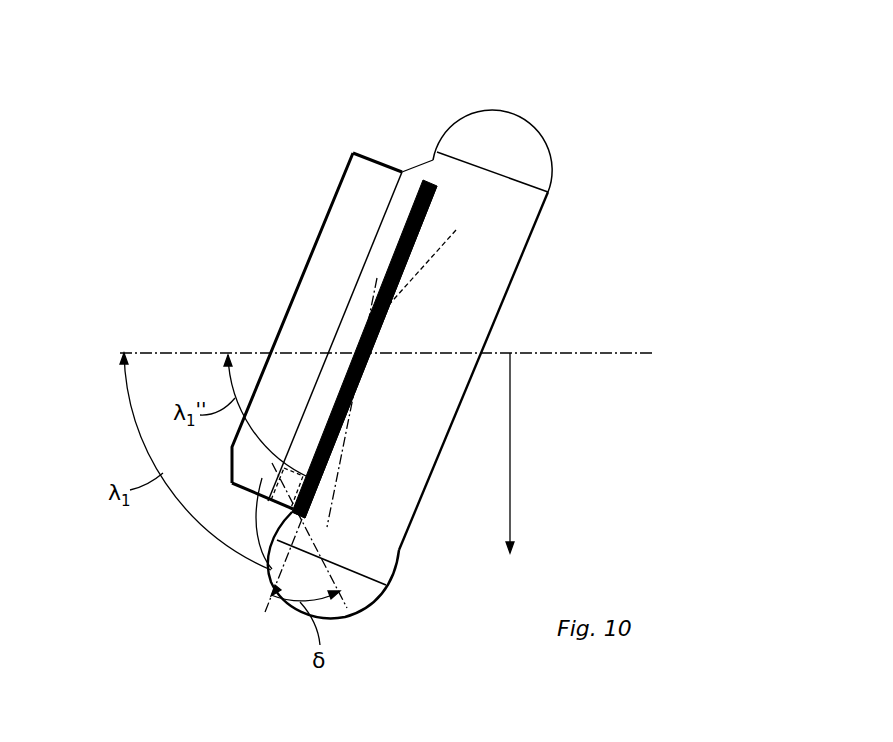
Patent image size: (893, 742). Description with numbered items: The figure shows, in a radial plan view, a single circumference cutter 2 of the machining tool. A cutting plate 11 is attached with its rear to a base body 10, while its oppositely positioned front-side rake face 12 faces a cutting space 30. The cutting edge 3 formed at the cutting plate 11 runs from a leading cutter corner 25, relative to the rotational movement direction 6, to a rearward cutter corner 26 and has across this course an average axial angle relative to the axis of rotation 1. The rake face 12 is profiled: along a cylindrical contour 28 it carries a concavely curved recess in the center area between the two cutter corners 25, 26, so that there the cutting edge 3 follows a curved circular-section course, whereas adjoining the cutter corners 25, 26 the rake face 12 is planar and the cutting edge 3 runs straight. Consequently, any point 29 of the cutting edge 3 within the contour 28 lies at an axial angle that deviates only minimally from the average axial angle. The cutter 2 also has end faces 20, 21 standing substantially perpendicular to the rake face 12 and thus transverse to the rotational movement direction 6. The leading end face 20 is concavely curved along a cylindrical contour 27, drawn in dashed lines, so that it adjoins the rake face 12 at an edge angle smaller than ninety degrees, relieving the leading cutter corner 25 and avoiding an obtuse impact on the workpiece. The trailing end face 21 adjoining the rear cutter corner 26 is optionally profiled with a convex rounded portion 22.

The axis of rotation 1 is at (600, 355).
The cutter 2 is at (369, 360).
The cutting edge 3 is at (425, 217).
The rotational movement direction 6 is at (511, 484).
The base body 10 is at (358, 208).
The cutting plate 11 is at (372, 305).
The rake face 12 is at (418, 254).
The end face 20 is at (251, 521).
The end face 21 is at (410, 150).
The convex rounded portion 22 is at (433, 181).
The leading cutter corner 25 is at (303, 522).
The rearward cutter corner 26 is at (437, 186).
The cylindrical contour 27 is at (281, 498).
The cylindrical contour 28 is at (333, 486).
The point 29 is at (352, 407).
The cutting space 30 is at (467, 303).